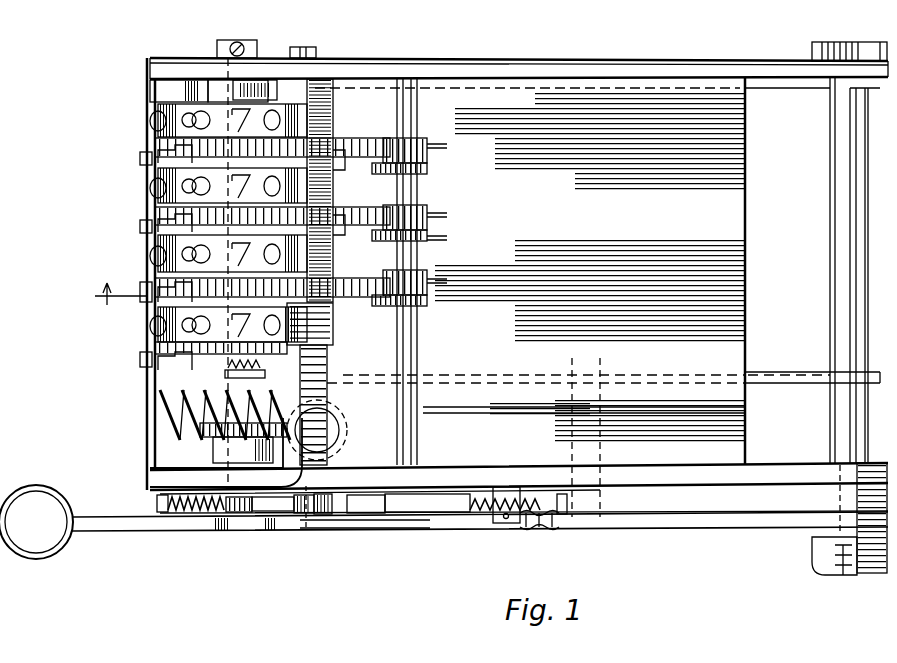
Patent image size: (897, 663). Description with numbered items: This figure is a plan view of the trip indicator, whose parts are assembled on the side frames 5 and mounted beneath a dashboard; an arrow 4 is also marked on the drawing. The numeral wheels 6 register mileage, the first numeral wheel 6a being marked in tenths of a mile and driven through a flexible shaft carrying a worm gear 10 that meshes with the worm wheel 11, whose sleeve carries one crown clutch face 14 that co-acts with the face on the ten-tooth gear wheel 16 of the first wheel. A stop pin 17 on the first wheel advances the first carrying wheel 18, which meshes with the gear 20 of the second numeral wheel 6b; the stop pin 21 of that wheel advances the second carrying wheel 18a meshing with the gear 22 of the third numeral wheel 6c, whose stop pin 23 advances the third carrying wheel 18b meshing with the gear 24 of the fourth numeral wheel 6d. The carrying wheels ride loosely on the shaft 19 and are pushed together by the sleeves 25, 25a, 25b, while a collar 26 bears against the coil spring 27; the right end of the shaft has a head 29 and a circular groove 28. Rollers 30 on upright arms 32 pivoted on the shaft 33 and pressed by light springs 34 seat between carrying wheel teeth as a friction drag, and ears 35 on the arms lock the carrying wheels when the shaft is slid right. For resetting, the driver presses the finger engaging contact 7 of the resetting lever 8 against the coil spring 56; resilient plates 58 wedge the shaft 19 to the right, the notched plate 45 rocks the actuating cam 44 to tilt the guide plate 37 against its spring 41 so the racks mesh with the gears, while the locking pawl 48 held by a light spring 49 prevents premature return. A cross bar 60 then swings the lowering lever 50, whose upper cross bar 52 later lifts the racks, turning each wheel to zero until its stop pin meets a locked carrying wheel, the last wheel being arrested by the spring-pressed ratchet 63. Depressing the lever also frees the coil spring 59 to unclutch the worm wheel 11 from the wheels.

The direction arrow 4 is at (120, 306).
The side frames 5 is at (634, 38).
The numeral wheels 6 is at (150, 126).
The first numeral wheel 6a is at (160, 336).
The second numeral wheel 6b is at (158, 254).
The third numeral wheel 6c is at (158, 183).
The fourth numeral wheel 6d is at (205, 104).
The finger engaging contact 7 is at (52, 548).
The resetting lever 8 is at (145, 533).
The worm gear 10 is at (345, 432).
The worm wheel 11 is at (213, 438).
The crown clutch face 14 is at (212, 373).
The gear wheel 16 is at (190, 353).
The stop pin 17 is at (240, 307).
The first carrying wheel 18 is at (350, 305).
The second carrying wheel 18a is at (345, 228).
The third carrying wheel 18b is at (350, 162).
The shaft 19 is at (318, 58).
The gear 20 is at (155, 278).
The stop pin 21 is at (225, 240).
The gear 22 is at (235, 228).
The stop pin 23 is at (247, 163).
The gear 24 is at (197, 137).
The sleeve 25 is at (387, 140).
The sleeve 25a is at (398, 205).
The sleeve 25b is at (330, 88).
The collar 26 is at (333, 318).
The coil spring 27 is at (328, 395).
The circular groove 28 is at (302, 508).
The head 29 is at (306, 530).
The rollers 30 is at (447, 238).
The upright arm 32 is at (420, 168).
The shaft 33 is at (416, 424).
The light spring 34 is at (447, 146).
The forwardly projecting ear 35 is at (412, 257).
The guide plate 37 is at (148, 476).
The spring 41 is at (162, 417).
The actuating cam 44 is at (452, 512).
The notched plate 45 is at (375, 512).
The locking pawl 48 is at (276, 502).
The light spring 49 is at (205, 512).
The lowering lever 50 is at (190, 86).
The cross bar 52 is at (170, 95).
The coil spring 56 is at (537, 528).
The resilient plates 58 is at (340, 516).
The coil spring 59 is at (254, 367).
The cross bar 60 is at (590, 501).
The spring-pressed ratchet 63 is at (253, 84).